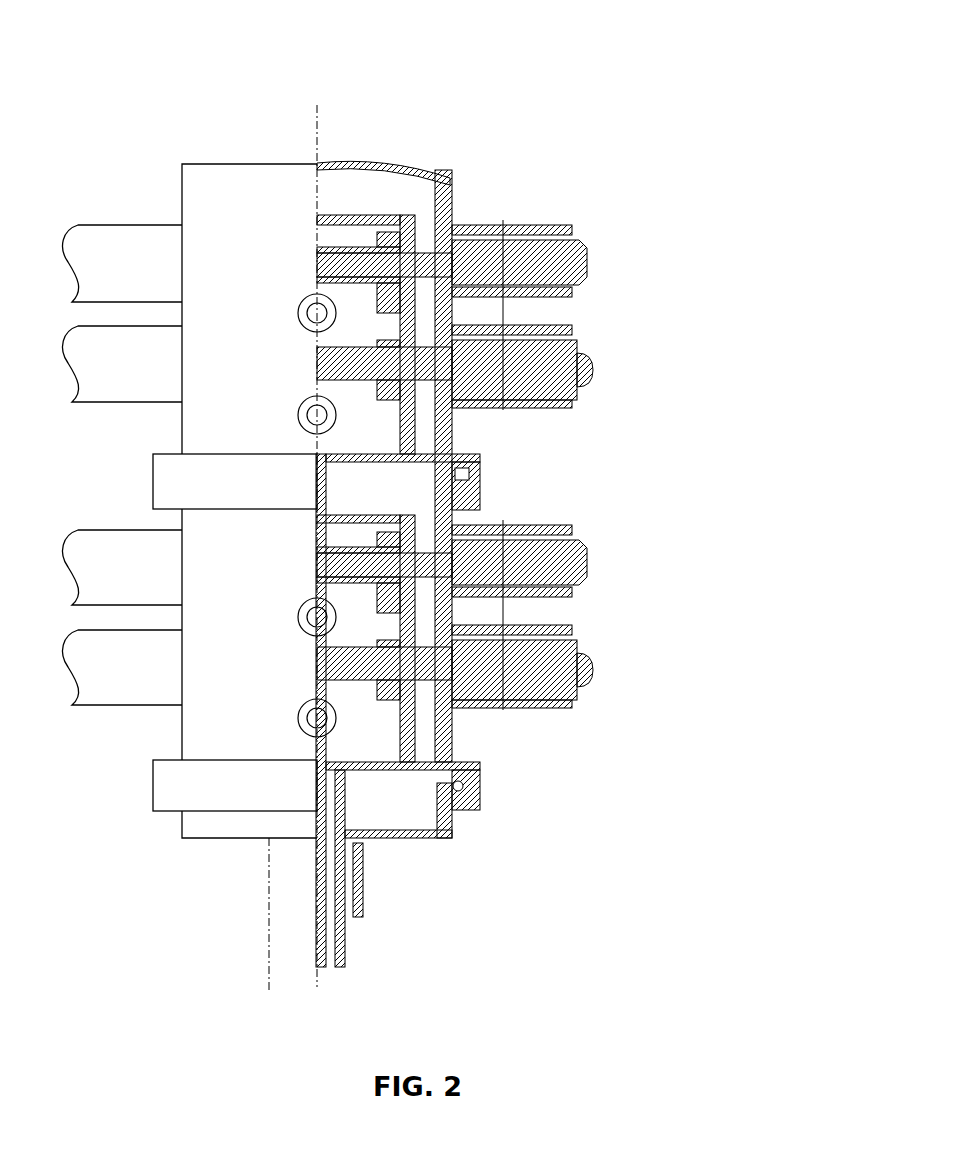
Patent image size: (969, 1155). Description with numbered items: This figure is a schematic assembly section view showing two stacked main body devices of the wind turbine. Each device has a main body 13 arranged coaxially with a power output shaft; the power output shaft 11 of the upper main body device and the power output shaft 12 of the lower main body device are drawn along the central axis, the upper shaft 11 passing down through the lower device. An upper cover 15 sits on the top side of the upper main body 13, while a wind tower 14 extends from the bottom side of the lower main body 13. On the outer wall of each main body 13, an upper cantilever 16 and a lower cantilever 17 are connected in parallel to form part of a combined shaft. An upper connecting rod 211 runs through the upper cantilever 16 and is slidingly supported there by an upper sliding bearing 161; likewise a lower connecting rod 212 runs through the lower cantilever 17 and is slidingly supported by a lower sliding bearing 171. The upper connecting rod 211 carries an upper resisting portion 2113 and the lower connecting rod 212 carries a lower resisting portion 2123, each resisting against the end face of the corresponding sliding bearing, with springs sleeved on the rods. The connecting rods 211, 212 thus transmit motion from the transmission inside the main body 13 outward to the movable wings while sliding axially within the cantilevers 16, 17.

The power output shaft of upper main body device 11 is at (327, 493).
The power output shaft of lower main body device 12 is at (347, 785).
The main body 13 is at (435, 182).
The wind tower 14 is at (365, 872).
The upper cover 15 is at (335, 157).
The upper cantilever 16 is at (465, 224).
The upper sliding bearing 161 is at (495, 233).
The lower cantilever 17 is at (497, 323).
The lower sliding bearing 171 is at (557, 340).
The upper connecting rod 211 is at (580, 257).
The lower connecting rod 212 is at (573, 390).
The upper resisting portion 2113 is at (420, 243).
The lower resisting portion 2123 is at (421, 383).